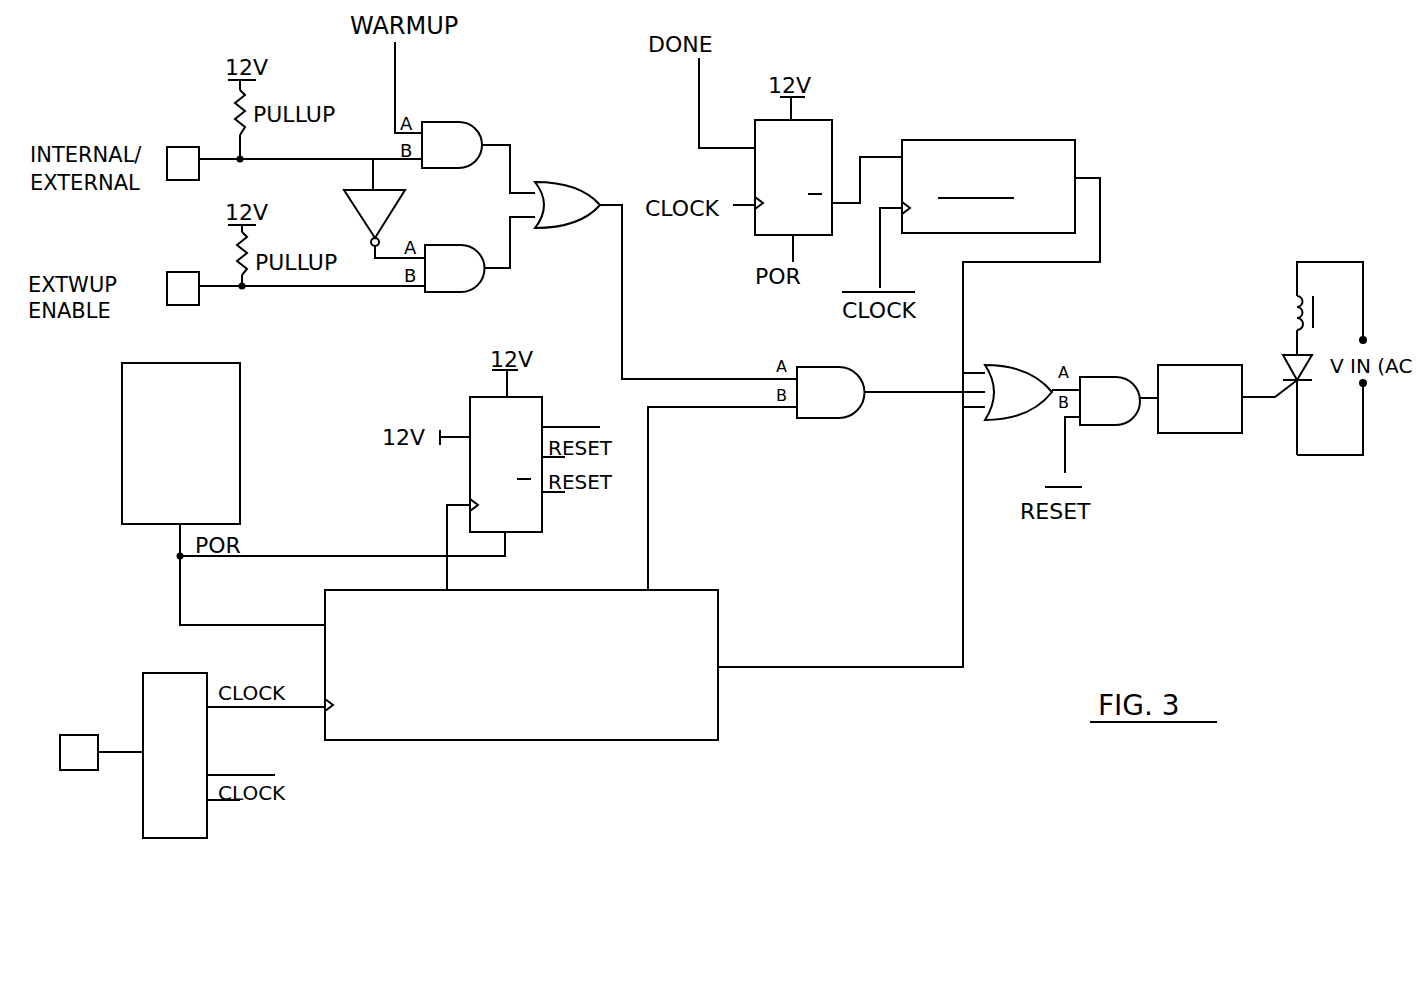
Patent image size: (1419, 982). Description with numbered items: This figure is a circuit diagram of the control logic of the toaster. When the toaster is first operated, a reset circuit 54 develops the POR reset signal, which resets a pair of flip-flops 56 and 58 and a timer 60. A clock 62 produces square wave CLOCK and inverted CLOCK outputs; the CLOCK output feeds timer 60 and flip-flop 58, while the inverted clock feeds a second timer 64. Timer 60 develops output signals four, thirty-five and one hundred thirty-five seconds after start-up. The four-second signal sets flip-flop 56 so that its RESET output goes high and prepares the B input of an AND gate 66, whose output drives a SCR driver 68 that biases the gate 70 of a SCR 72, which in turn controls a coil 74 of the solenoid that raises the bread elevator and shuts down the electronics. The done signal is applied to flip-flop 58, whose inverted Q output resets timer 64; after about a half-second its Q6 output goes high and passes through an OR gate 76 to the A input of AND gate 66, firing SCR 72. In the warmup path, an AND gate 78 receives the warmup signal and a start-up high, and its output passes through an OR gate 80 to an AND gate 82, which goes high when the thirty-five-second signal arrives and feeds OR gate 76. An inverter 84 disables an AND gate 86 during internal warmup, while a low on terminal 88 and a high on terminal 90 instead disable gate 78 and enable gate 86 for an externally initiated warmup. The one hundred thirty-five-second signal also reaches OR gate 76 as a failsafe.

The reset circuit 54 is at (243, 400).
The flip-flop 56 is at (545, 521).
The flip-flop 58 is at (750, 231).
The timer 60 is at (422, 742).
The clock 62 is at (212, 823).
The timer 64 is at (1012, 136).
The AND gate 66 is at (1100, 377).
The SCR driver 68 is at (1197, 365).
The gate 70 is at (1273, 405).
The SCR 72 is at (1263, 317).
The coil 74 is at (1293, 302).
The OR gate 76 is at (1005, 363).
The AND gate 78 is at (460, 121).
The OR gate 80 is at (575, 181).
The AND gate 82 is at (823, 420).
The inverter 84 is at (353, 213).
The AND gate 86 is at (450, 293).
The terminal 88 is at (180, 146).
The terminal 90 is at (182, 270).